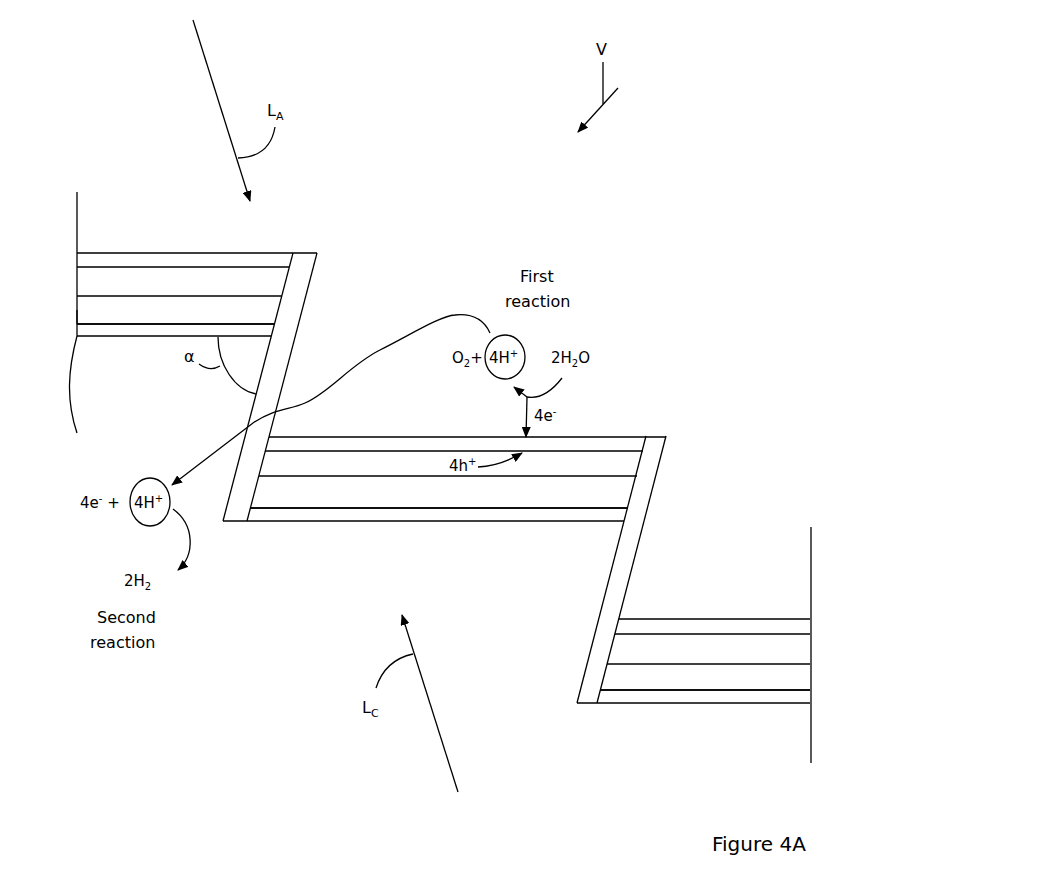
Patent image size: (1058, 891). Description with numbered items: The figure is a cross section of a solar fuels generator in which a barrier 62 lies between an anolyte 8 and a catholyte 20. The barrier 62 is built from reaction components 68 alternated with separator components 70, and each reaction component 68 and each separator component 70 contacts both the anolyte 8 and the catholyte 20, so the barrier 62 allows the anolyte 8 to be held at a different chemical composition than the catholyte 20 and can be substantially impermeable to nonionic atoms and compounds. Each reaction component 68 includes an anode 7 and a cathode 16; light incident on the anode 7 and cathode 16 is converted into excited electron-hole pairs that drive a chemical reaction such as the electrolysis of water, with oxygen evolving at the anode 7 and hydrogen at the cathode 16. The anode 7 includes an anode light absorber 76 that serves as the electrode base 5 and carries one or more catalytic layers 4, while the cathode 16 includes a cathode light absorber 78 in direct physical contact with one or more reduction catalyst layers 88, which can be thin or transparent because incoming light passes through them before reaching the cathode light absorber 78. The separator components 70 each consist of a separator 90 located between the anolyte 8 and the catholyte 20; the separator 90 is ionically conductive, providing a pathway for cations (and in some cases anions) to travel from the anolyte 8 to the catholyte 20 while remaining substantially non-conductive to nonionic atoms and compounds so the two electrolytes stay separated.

The barrier 62 is at (62, 291).
The catalytic layer 4 is at (188, 267).
The anode light absorber 76 is at (135, 288).
The electrode base 5 is at (135, 288).
The cathode light absorber 78 is at (95, 310).
The reduction catalyst layer 88 is at (124, 336).
The anode 7 is at (300, 288).
The cathode 16 is at (299, 308).
The separator 90 is at (282, 368).
The reaction component 68 is at (135, 226).
The separator component 70 is at (250, 405).
The anolyte 8 is at (723, 237).
The catholyte 20 is at (113, 749).